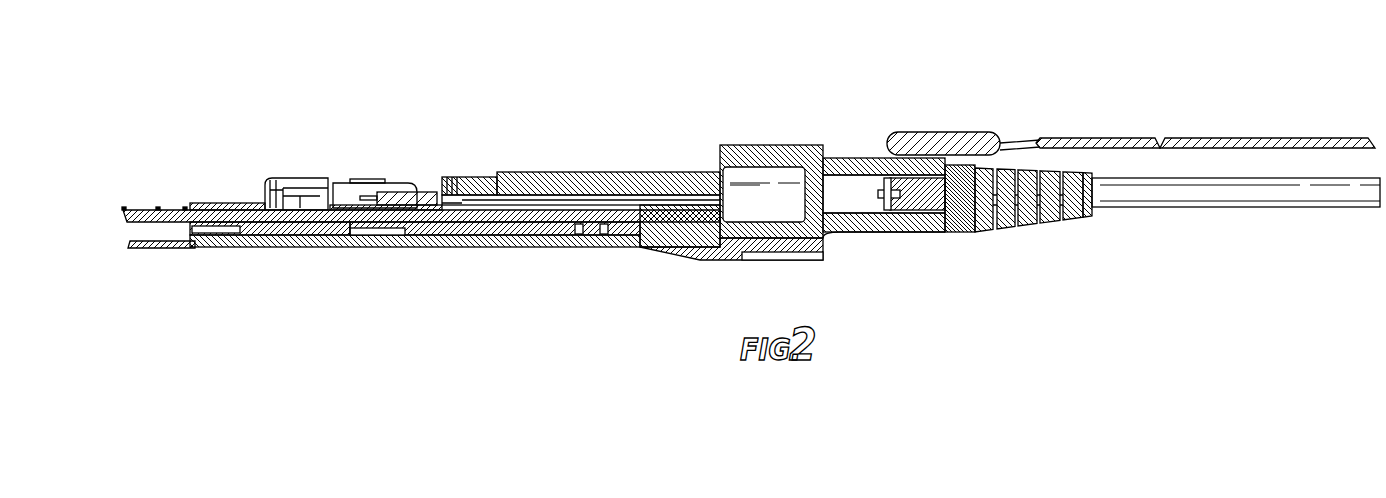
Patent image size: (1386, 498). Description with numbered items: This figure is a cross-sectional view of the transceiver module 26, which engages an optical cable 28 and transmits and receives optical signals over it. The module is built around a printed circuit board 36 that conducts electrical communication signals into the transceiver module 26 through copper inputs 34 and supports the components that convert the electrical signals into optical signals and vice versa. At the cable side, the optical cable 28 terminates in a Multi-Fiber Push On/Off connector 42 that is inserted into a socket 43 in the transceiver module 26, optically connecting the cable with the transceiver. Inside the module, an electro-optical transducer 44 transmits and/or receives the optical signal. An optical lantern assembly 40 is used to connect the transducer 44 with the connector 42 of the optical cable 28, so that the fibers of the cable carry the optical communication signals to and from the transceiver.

The transceiver module 26 is at (631, 258).
The optical cable 28 is at (1240, 176).
The copper inputs 34 is at (137, 208).
The printed circuit board 36 is at (122, 226).
The optical lantern assembly 40 is at (296, 190).
The MPO connector 42 is at (361, 184).
The socket 43 is at (404, 183).
The electro-optical transducer 44 is at (303, 226).